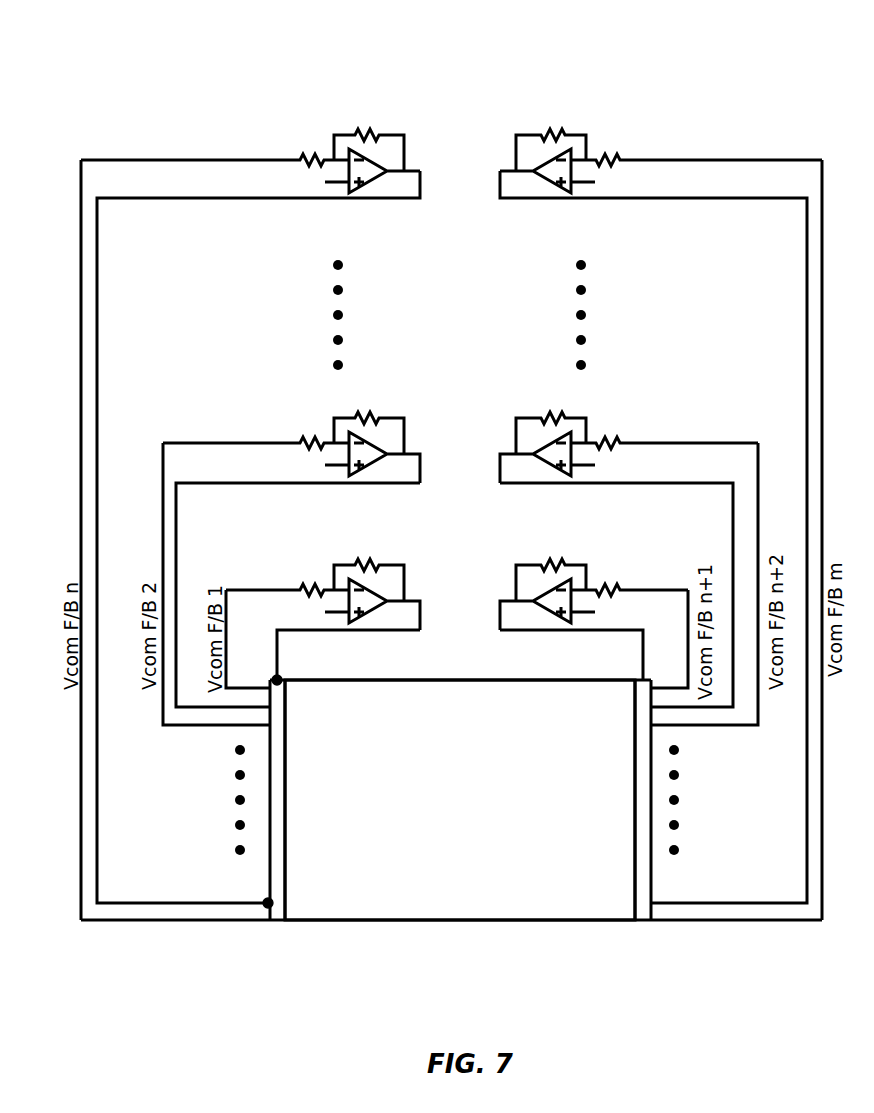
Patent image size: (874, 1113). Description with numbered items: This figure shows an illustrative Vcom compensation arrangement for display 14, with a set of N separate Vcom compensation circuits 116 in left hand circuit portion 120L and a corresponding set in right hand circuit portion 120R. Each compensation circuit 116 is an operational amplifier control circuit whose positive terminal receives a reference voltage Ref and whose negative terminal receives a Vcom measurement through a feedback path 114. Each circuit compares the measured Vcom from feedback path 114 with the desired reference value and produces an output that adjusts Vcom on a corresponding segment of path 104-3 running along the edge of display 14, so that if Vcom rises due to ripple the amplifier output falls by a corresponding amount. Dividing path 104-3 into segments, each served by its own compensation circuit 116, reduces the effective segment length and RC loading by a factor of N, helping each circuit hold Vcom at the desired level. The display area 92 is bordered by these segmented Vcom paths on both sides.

The display 14 is at (348, 950).
The display pixel array 92 is at (550, 912).
The path 104-3 is at (285, 860).
The feedback path 114 is at (237, 690).
The Vcom compensation circuit 116 is at (513, 225).
The left hand circuit portion 120L is at (448, 77).
The right hand circuit portion 120R is at (828, 77).